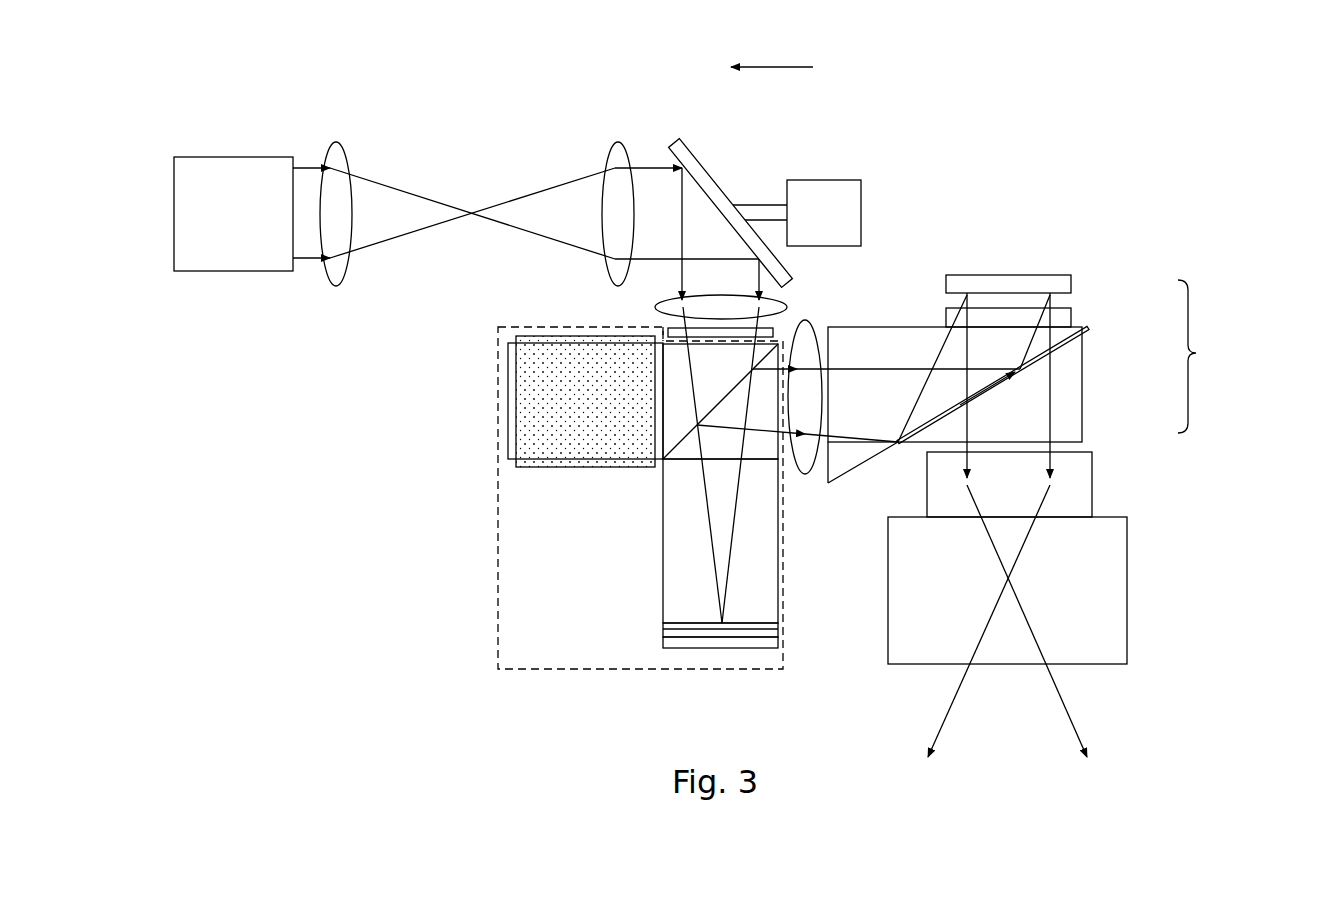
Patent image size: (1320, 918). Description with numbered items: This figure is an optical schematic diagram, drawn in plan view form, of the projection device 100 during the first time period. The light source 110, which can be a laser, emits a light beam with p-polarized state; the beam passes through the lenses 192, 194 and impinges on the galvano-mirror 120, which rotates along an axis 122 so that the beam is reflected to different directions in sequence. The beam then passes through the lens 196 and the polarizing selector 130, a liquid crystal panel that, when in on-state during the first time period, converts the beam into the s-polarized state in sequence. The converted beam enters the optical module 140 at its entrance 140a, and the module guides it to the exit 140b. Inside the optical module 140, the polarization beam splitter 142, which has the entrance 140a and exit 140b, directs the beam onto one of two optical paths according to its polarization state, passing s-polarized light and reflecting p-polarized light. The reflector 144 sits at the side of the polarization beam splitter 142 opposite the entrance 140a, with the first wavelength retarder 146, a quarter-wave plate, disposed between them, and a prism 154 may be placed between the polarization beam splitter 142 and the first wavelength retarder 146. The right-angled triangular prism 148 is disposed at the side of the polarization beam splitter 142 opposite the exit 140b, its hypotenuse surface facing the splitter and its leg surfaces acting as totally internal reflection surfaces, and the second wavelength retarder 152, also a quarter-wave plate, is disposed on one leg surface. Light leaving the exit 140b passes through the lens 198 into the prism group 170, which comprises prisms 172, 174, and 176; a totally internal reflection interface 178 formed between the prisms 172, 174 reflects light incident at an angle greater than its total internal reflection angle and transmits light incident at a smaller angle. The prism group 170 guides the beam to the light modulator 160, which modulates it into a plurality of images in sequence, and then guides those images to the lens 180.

The projection device 100 is at (197, 54).
The light source 110 is at (236, 165).
The galvano-mirror 120 is at (831, 189).
The axis 122 is at (772, 52).
The polarizing selector 130 is at (792, 318).
The optical module 140 is at (497, 575).
The entrance 140a is at (661, 336).
The exit 140b is at (782, 464).
The polarization beam splitter 142 is at (686, 452).
The reflector 144 is at (668, 643).
The first wavelength retarder 146 is at (668, 631).
The right-angled triangular prism 148 is at (510, 400).
The second wavelength retarder 152 is at (533, 468).
The prism 154 is at (668, 590).
The light modulator 160 is at (1011, 280).
The prism group 170 is at (1210, 356).
The prism 172 is at (1068, 337).
The prism 174 is at (1063, 372).
The prism 176 is at (1065, 317).
The totally internal reflection interface 178 is at (1012, 388).
The lens 180 is at (1118, 574).
The lens 192 is at (334, 150).
The lens 194 is at (619, 152).
The lens 196 is at (668, 296).
The lens 198 is at (803, 335).